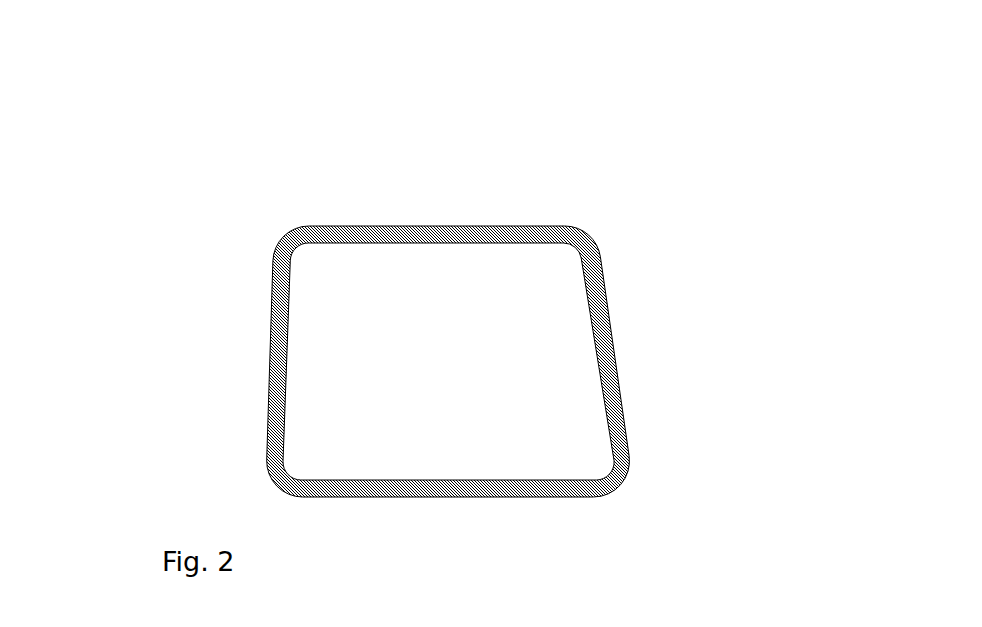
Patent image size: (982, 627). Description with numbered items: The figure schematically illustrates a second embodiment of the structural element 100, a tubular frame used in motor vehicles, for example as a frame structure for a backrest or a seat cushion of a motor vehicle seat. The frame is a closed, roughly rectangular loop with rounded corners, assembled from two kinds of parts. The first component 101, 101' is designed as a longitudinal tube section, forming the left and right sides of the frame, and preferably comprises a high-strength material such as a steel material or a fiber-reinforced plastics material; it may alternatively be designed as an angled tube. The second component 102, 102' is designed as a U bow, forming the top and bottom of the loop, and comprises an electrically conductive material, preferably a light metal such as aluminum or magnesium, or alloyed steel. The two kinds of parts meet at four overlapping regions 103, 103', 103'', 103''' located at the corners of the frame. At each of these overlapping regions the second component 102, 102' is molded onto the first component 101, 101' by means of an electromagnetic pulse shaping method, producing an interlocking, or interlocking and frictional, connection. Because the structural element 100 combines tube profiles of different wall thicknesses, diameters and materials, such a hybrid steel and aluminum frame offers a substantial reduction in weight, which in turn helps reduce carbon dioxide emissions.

The structural element 100 is at (603, 197).
The first component 101 is at (207, 365).
The first component 101' is at (697, 360).
The second component 102 is at (437, 173).
The second component 102' is at (447, 543).
The overlapping region 103 is at (250, 227).
The overlapping region 103' is at (659, 257).
The overlapping region 103'' is at (697, 456).
The overlapping region 103''' is at (188, 462).